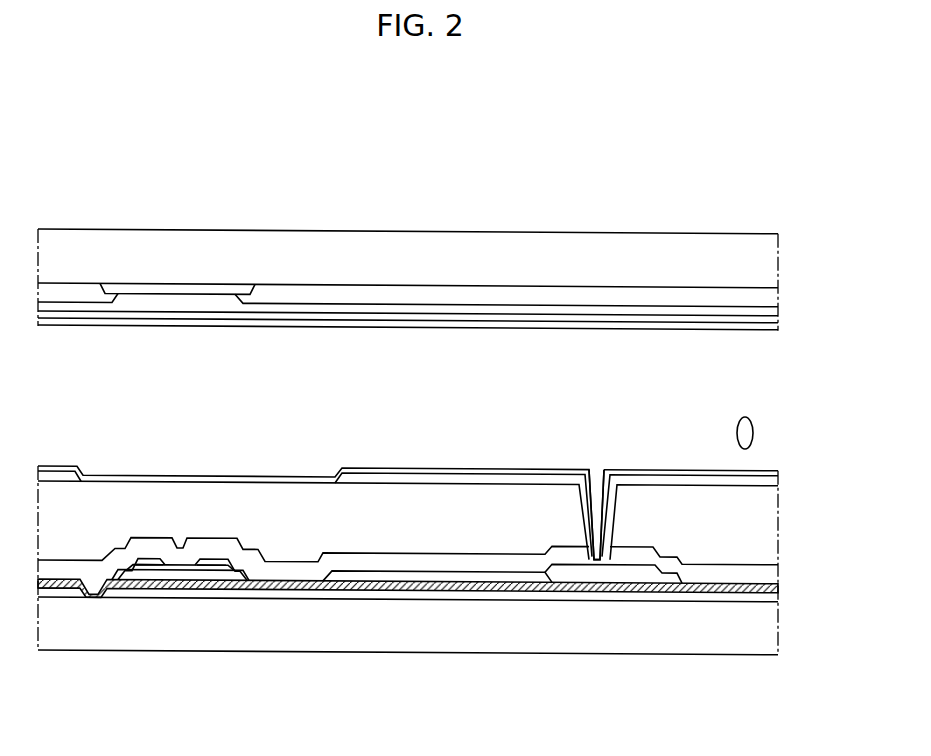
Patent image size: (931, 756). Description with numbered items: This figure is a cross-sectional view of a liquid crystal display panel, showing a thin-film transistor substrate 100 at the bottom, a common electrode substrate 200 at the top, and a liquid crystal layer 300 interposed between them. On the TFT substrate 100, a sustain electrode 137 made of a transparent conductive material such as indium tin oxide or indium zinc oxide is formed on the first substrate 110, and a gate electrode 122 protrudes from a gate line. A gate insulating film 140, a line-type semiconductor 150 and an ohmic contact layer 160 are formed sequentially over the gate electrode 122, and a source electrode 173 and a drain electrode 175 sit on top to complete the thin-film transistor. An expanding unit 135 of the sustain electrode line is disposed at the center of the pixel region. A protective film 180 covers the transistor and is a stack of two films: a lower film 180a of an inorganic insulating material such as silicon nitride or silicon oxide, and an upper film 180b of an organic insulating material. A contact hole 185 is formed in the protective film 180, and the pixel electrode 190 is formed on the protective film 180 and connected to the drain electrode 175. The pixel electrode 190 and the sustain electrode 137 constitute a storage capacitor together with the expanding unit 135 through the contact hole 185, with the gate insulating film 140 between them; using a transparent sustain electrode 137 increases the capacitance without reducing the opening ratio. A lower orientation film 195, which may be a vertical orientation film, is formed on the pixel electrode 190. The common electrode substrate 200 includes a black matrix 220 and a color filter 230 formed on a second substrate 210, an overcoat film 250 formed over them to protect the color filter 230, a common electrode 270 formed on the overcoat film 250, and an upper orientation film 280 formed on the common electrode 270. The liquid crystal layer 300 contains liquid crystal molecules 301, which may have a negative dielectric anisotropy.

The thin-film transistor substrate 100 is at (788, 472).
The first substrate 110 is at (333, 640).
The gate electrode 122 is at (178, 574).
The expanding unit 135 is at (612, 587).
The sustain electrode 137 is at (60, 590).
The gate insulating film 140 is at (698, 593).
The line-type semiconductor 150 is at (198, 569).
The ohmic contact layer 160 is at (152, 572).
The source electrode 173 is at (142, 568).
The drain electrode 175 is at (232, 565).
The protective film 180 is at (408, 457).
The lower film 180a is at (370, 557).
The upper film 180b is at (426, 498).
The contact hole 185 is at (591, 498).
The pixel electrode 190 is at (60, 470).
The lower orientation film 195 is at (636, 468).
The common electrode substrate 200 is at (788, 233).
The second substrate 210 is at (378, 242).
The black matrix 220 is at (163, 292).
The color filter 230 is at (74, 293).
The overcoat film 250 is at (458, 311).
The common electrode 270 is at (524, 320).
The upper orientation film 280 is at (688, 331).
The liquid crystal layer 300 is at (788, 340).
The liquid crystal molecules 301 is at (745, 402).